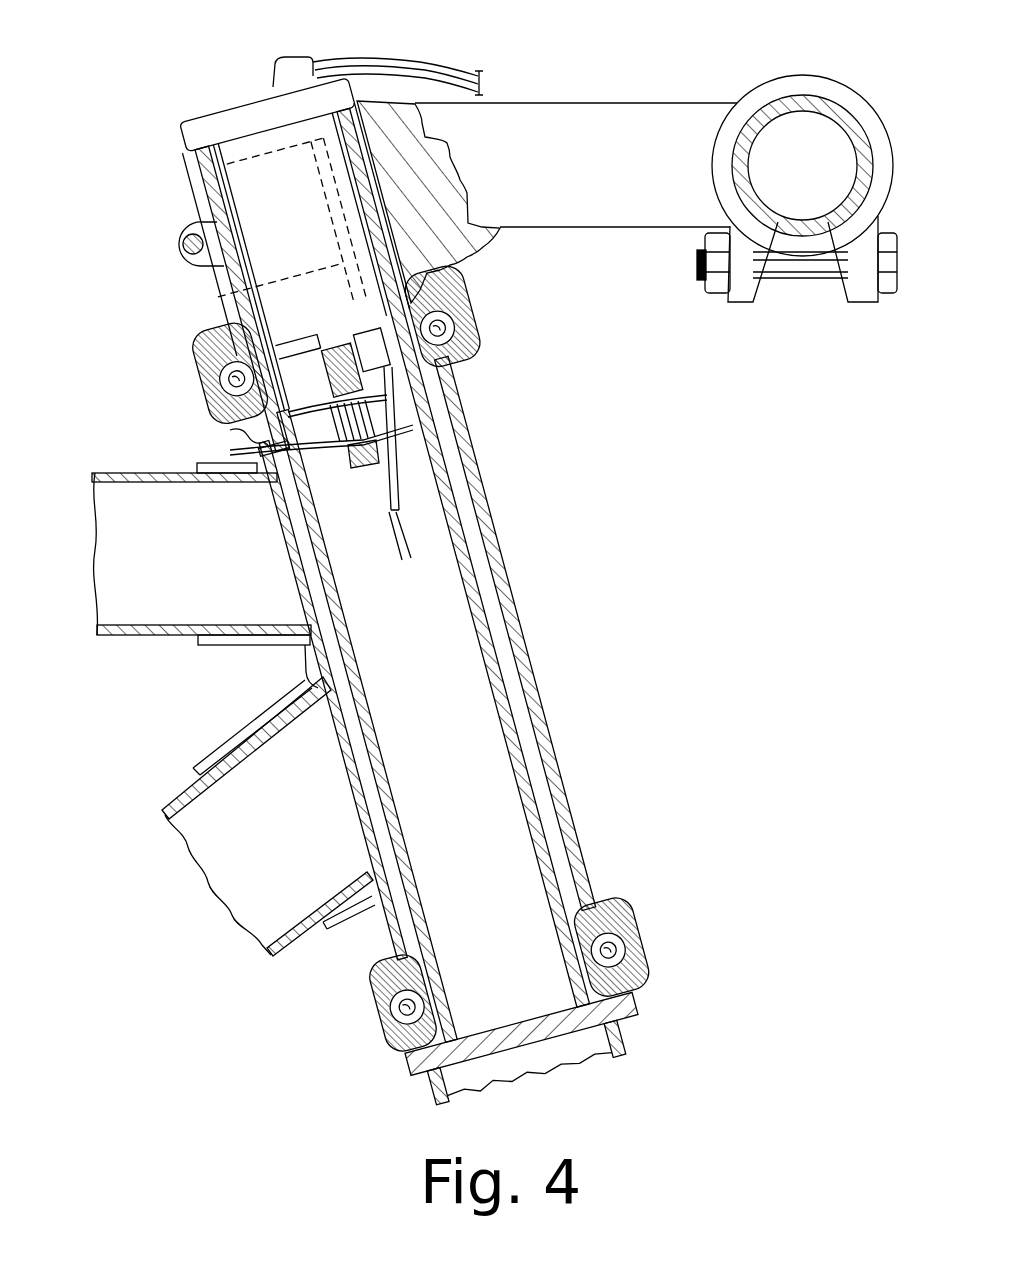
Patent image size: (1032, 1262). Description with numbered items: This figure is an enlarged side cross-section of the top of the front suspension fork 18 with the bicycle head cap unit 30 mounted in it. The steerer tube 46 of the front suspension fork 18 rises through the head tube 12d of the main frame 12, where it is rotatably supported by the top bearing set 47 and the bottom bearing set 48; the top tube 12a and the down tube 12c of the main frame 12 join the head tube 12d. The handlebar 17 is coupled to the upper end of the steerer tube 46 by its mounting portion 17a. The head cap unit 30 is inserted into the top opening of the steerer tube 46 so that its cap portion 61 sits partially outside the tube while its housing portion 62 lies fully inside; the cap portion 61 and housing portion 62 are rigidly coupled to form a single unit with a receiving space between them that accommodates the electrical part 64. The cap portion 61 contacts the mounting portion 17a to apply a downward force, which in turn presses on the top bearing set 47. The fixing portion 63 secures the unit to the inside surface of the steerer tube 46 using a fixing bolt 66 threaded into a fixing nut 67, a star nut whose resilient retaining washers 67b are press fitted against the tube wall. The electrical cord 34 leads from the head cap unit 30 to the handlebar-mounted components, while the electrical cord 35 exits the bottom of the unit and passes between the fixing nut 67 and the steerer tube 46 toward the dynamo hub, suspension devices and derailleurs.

The main frame 12 is at (100, 640).
The top tube 12a is at (98, 470).
The down tube 12c is at (162, 810).
The head tube 12d is at (570, 790).
The handlebar 17 is at (803, 98).
The mounting portion 17a is at (618, 103).
The front suspension fork 18 is at (642, 998).
The bicycle head cap unit 30 is at (327, 303).
The electrical cord 34 is at (403, 57).
The electrical cord 35 is at (462, 480).
The steerer tube 46 is at (512, 692).
The top bearing set 47 is at (478, 330).
The bottom bearing set 48 is at (655, 928).
The cap portion 61 is at (180, 128).
The housing portion 62 is at (255, 185).
The fixing portion 63 is at (341, 460).
The electrical part 64 is at (205, 292).
The fixing bolt 66 is at (374, 525).
The fixing nut 67 is at (425, 432).
The retaining washers 67b is at (230, 440).